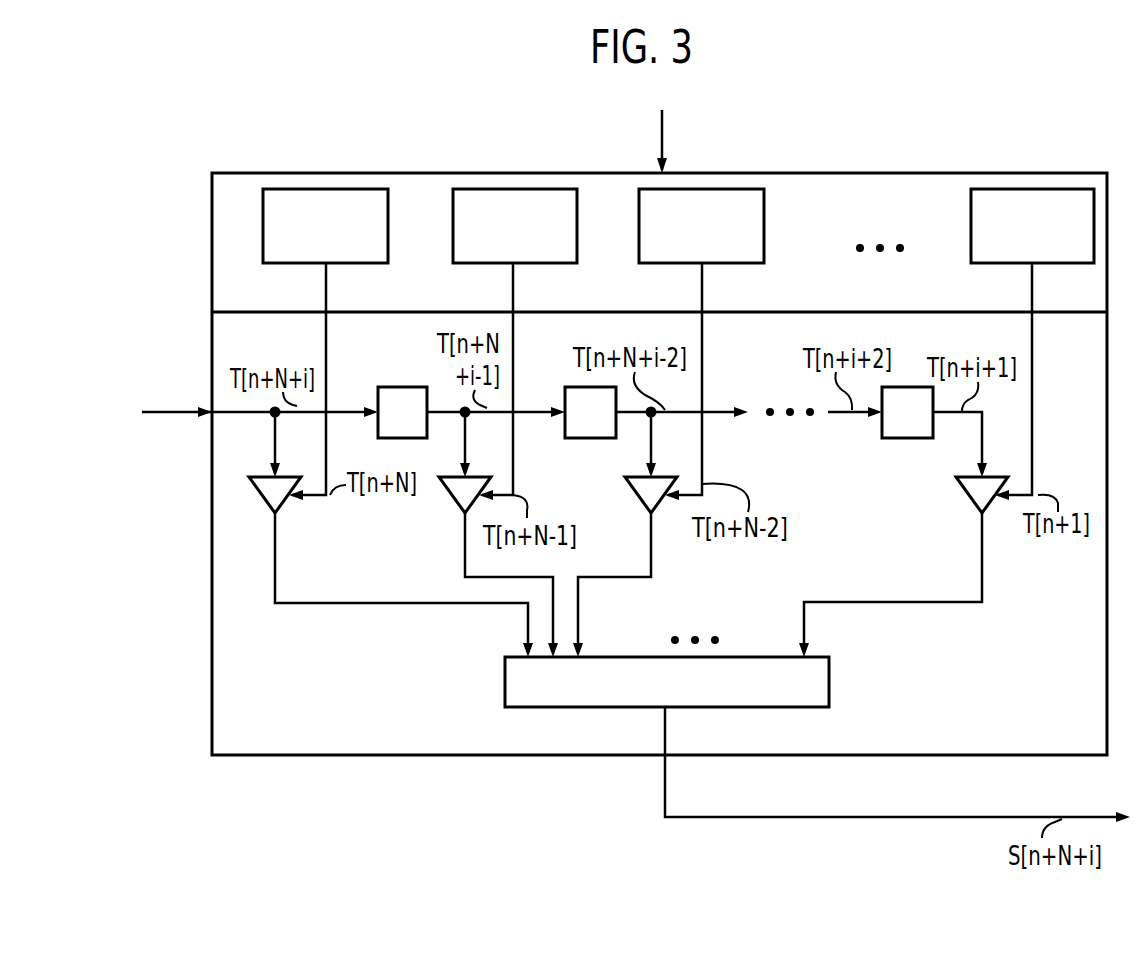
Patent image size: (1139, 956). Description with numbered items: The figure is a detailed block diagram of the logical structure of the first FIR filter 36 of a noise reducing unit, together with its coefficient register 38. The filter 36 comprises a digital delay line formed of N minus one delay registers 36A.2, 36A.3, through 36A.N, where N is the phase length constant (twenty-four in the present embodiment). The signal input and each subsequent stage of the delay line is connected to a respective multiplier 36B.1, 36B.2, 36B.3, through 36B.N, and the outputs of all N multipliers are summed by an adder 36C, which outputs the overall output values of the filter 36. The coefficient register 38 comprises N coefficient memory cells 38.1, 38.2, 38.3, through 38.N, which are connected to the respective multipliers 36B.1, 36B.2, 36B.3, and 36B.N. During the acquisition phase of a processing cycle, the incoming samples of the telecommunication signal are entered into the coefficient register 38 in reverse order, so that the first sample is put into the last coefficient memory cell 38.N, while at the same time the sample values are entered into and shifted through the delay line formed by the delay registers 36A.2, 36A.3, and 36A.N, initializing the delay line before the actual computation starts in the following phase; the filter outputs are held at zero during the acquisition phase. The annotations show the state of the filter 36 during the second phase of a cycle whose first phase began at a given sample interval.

The first FIR filter 36 is at (270, 758).
The coefficient register 38 is at (258, 170).
The coefficient memory cell 38.1 is at (345, 264).
The coefficient memory cell 38.2 is at (534, 264).
The coefficient memory cell 38.3 is at (721, 264).
The coefficient memory cell 38.N is at (1020, 264).
The delay register 36A.2 is at (400, 387).
The delay register 36A.3 is at (590, 438).
The delay register 36A.N is at (905, 438).
The multiplier 36B.1 is at (288, 500).
The multiplier 36B.2 is at (455, 500).
The multiplier 36B.3 is at (665, 503).
The multiplier 36B.N is at (968, 500).
The adder 36C is at (831, 680).